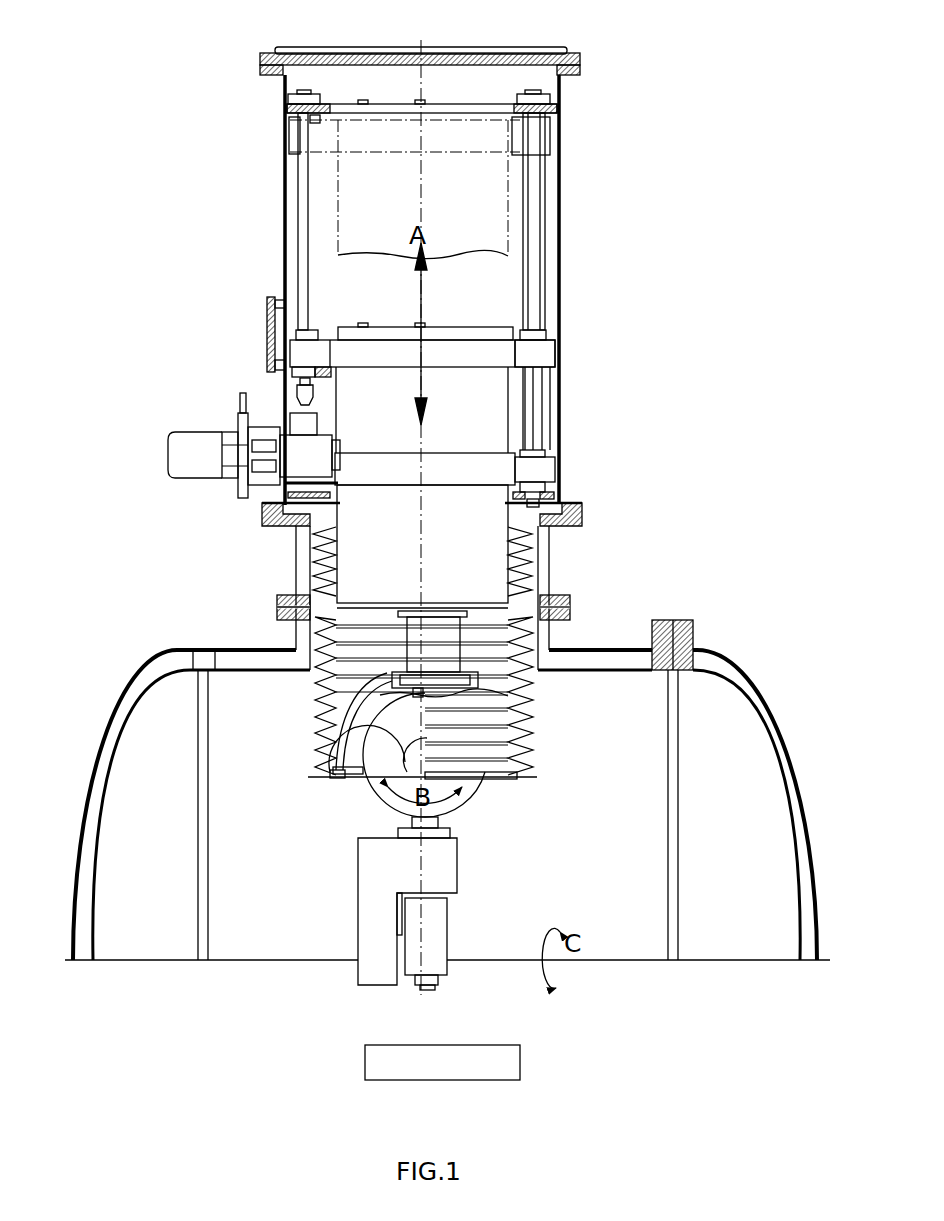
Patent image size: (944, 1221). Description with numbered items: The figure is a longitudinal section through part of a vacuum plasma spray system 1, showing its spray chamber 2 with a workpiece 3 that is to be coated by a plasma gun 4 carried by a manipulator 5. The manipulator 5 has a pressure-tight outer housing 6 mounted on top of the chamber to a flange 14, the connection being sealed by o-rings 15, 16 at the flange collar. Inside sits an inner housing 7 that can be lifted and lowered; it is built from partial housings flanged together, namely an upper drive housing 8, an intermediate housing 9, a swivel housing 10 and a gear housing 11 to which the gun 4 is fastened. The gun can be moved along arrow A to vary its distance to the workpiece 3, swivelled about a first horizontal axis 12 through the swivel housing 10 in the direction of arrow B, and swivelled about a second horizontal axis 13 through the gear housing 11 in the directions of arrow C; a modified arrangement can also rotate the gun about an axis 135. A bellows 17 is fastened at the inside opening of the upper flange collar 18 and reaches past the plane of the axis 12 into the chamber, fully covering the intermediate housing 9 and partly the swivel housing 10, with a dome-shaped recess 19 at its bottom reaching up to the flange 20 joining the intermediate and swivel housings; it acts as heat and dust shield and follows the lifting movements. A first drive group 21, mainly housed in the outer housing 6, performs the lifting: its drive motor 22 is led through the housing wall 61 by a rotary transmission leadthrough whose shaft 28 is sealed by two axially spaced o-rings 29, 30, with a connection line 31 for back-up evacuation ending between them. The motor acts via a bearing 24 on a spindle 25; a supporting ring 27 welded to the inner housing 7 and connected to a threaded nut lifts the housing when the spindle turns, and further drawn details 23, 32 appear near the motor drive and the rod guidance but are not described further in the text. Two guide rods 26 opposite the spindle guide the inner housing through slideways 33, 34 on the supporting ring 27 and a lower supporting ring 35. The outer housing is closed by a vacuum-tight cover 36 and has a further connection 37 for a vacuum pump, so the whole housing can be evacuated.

The vacuum plasma spray system 1 is at (706, 640).
The spray chamber 2 is at (752, 718).
The workpiece 3 is at (470, 1058).
The plasma gun 4 is at (425, 935).
The manipulator 5 is at (582, 330).
The outer housing 6 is at (562, 412).
The inner housing 7 is at (478, 415).
The drive housing 8 is at (540, 480).
The intermediate housing 9 is at (440, 650).
The swivel housing 10 is at (388, 782).
The gear housing 11 is at (400, 868).
The first horizontal axis 12 is at (350, 758).
The second horizontal axis 13 is at (745, 964).
The flange 14 is at (550, 562).
The o-ring 15 is at (584, 540).
The o-ring 16 is at (562, 520).
The bellows 17 is at (562, 612).
The upper flange collar 18 is at (585, 540).
The dome-shaped recess 19 is at (355, 775).
The flange 20 is at (340, 710).
The first drive group 21 is at (293, 408).
The drive motor 22 is at (190, 455).
The seal bush 23 is at (322, 375).
The bearing 24 is at (314, 402).
The spindle 25 is at (304, 232).
The guide rods 26 is at (540, 206).
The supporting ring 27 is at (445, 358).
The shaft 28 is at (333, 446).
The o-ring 29 is at (230, 438).
The o-ring 30 is at (252, 470).
The connection line 31 is at (240, 424).
The rod guide 32 is at (495, 412).
The slideway 33 is at (545, 350).
The slideway 34 is at (542, 466).
The supporting ring 35 is at (435, 492).
The vacuum-tight cover 36 is at (500, 52).
The connection 37 is at (268, 312).
The housing wall 61 is at (288, 386).
The axis 135 is at (425, 988).